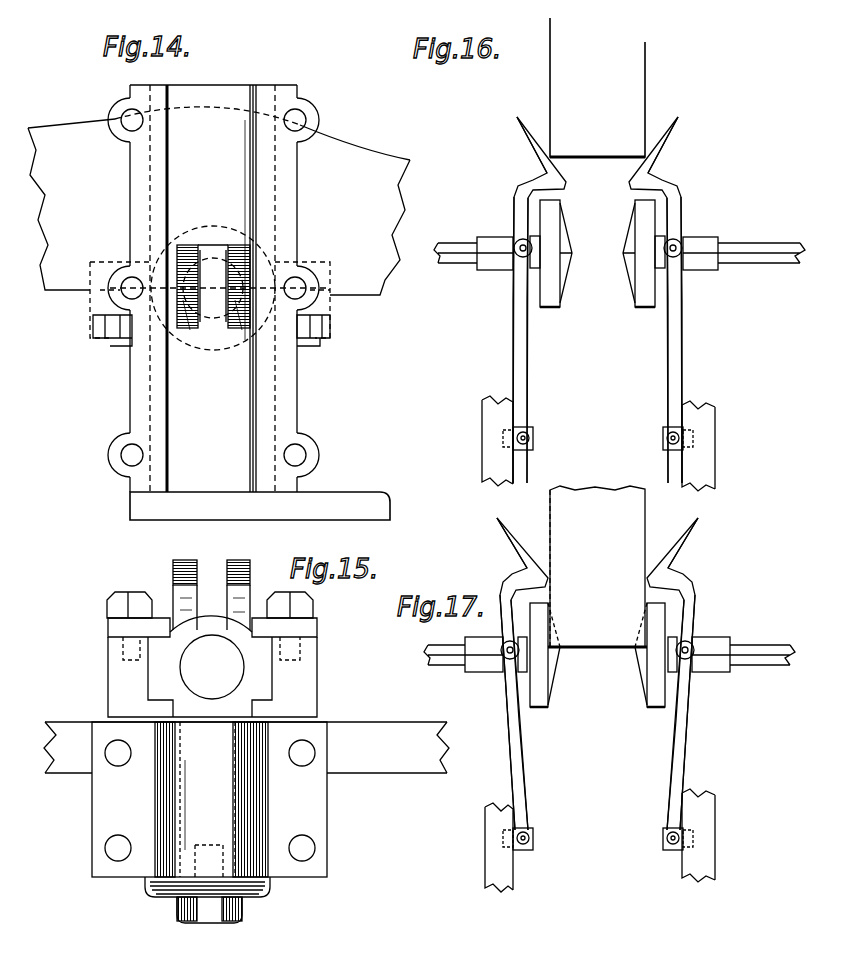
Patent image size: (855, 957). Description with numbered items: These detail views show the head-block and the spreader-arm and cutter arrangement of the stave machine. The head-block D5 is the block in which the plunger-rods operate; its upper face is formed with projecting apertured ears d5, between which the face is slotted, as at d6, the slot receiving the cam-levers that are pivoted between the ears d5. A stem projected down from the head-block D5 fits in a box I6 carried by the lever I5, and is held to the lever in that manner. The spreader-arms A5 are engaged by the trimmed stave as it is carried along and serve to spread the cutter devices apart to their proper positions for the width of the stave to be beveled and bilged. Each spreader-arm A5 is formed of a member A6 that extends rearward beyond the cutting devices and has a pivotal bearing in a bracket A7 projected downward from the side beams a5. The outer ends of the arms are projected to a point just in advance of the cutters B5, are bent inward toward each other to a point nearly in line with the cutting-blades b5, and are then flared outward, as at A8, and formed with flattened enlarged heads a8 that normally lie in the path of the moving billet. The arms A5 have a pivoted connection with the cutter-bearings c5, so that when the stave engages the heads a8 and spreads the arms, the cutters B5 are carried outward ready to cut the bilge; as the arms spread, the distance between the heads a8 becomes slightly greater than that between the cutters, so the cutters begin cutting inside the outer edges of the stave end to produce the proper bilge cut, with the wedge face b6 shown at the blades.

In FIG. 14, the head-block D5 is at (240, 302).
In FIG. 15, the head-block D5 is at (258, 662).
In FIG. 14, the lever I5 is at (219, 201).
In FIG. 15, the lever I5 is at (246, 747).
In FIG. 15, the box I6 is at (209, 822).
In FIG. 14, the apertured ears d5 is at (195, 262).
In FIG. 15, the apertured ears d5 is at (196, 583).
In FIG. 14, the slot d6 is at (221, 320).
In FIG. 16, the flared outward portion A8 is at (545, 155).
In FIG. 17, the flared outward portion A8 is at (597, 674).
In FIG. 16, the flattened enlarged heads a8 is at (597, 143).
In FIG. 17, the flattened enlarged heads a8 is at (660, 545).
In FIG. 16, the spreader-arms A5 is at (680, 208).
In FIG. 17, the spreader-arms A5 is at (692, 604).
In FIG. 16, the member A6 is at (680, 372).
In FIG. 17, the member A6 is at (680, 776).
In FIG. 16, the bracket A7 is at (663, 440).
In FIG. 17, the bracket A7 is at (663, 838).
In FIG. 16, the side beams a5 is at (598, 443).
In FIG. 17, the side beams a5 is at (600, 840).
In FIG. 16, the cutter-bearings c5 is at (619, 241).
In FIG. 17, the cutter-bearings c5 is at (609, 647).
In FIG. 16, the cutters B5 is at (597, 253).
In FIG. 17, the cutters B5 is at (597, 655).
In FIG. 16, the cutting-blades b5 is at (630, 252).
In FIG. 17, the cutting-blades b5 is at (644, 665).
In FIG. 17, the jaw wedge face b6 is at (560, 660).